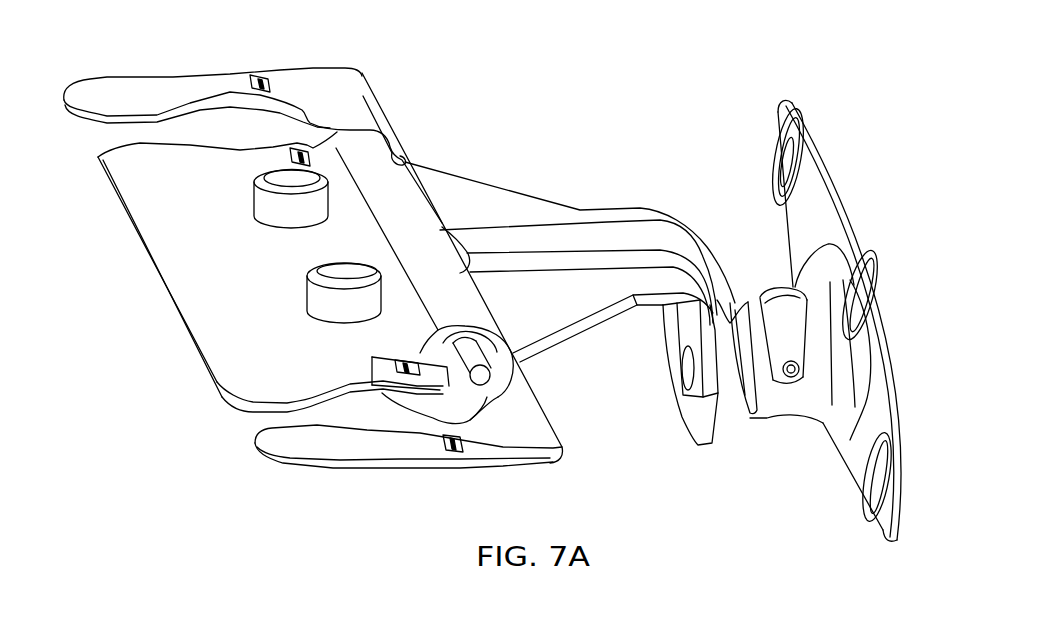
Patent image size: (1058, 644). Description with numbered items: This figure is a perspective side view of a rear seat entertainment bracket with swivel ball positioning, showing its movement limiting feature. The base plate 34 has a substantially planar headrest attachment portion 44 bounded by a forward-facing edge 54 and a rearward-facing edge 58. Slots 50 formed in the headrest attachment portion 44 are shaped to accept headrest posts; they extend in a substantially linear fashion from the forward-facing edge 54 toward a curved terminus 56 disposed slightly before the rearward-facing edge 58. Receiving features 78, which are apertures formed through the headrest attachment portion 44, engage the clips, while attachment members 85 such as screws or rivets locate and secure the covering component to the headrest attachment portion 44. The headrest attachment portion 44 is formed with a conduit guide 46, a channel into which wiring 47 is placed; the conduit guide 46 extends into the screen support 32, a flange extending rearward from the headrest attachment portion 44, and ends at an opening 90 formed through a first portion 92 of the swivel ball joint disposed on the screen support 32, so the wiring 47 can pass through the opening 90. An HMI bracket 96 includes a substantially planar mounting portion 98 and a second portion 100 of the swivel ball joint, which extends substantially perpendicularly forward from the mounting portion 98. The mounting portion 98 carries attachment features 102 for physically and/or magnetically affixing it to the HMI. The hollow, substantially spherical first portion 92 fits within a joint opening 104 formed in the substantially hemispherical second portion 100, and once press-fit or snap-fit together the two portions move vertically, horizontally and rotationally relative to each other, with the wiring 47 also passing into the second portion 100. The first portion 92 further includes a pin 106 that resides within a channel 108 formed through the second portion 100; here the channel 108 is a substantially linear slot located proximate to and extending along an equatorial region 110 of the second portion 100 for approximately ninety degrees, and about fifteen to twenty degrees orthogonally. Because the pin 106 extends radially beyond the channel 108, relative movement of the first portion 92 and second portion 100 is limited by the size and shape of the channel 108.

The screen support 32 is at (678, 432).
The base plate 34 is at (131, 278).
The headrest attachment portion 44 is at (230, 340).
The conduit guide 46 is at (482, 243).
The wiring 47 is at (483, 357).
The slots 50 is at (200, 126).
The forward-facing edge 54 is at (213, 380).
The curved terminus 56 is at (310, 123).
The rearward-facing edge 58 is at (553, 410).
The receiving features 78 is at (289, 150).
The attachment members 85 is at (330, 270).
The opening 90 is at (683, 373).
The first portion 92 is at (780, 310).
The HMI bracket 96 is at (810, 188).
The mounting portion 98 is at (833, 217).
The second portion 100 is at (803, 403).
The attachment features 102 is at (853, 307).
The joint opening 104 is at (727, 305).
The pin 106 is at (795, 375).
The channel 108 is at (780, 352).
The equatorial region 110 is at (791, 404).